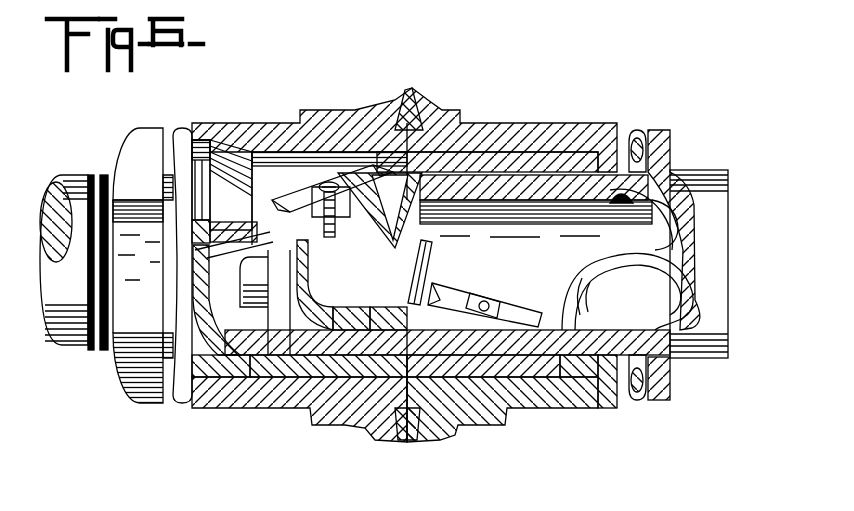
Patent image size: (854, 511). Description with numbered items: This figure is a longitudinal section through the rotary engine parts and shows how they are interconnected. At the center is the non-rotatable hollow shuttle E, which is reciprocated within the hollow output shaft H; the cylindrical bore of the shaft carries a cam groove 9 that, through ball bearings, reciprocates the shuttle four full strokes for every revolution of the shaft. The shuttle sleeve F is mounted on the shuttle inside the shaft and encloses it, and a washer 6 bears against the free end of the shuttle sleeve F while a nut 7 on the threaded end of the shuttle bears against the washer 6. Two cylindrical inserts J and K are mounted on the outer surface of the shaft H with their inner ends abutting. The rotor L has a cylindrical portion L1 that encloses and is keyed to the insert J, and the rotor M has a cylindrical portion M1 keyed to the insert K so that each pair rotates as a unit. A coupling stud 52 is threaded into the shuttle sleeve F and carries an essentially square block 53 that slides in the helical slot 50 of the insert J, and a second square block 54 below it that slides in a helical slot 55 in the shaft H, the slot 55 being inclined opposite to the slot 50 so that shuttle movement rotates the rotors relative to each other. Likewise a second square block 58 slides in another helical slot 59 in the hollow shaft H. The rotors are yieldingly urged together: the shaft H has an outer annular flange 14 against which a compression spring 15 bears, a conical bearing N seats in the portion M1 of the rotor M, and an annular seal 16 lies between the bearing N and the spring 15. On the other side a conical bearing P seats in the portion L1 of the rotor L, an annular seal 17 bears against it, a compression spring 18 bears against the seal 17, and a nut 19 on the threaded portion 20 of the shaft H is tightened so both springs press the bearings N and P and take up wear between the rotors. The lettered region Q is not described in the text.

The washer 6 is at (278, 377).
The nut 7 is at (238, 375).
The cam groove 9 is at (602, 265).
The outer annular flange 14 is at (670, 143).
The compression spring 15 is at (637, 127).
The annular seal 16 is at (625, 392).
The annular seal 17 is at (199, 140).
The compression spring 18 is at (182, 133).
The nut 19 is at (145, 397).
The threaded portion 20 is at (98, 353).
The helical slot 50 is at (300, 193).
The coupling stud 52 is at (328, 238).
The square block 53 is at (362, 190).
The second square block 54 is at (351, 295).
The helical slot 55 is at (388, 295).
The second square block 58 is at (493, 302).
The helical slot 59 is at (445, 293).
The hollow shuttle E is at (430, 253).
The shuttle sleeve F is at (302, 408).
The hollow output shaft H is at (728, 180).
The cylindrical insert J is at (288, 160).
The cylindrical insert K is at (524, 160).
The rotor L is at (328, 112).
The cylindrical portion L1 is at (255, 137).
The rotor M is at (462, 112).
The cylindrical portion M1 is at (533, 398).
The conical bearing N is at (587, 383).
The conical bearing P is at (213, 403).
The region Q is at (408, 437).